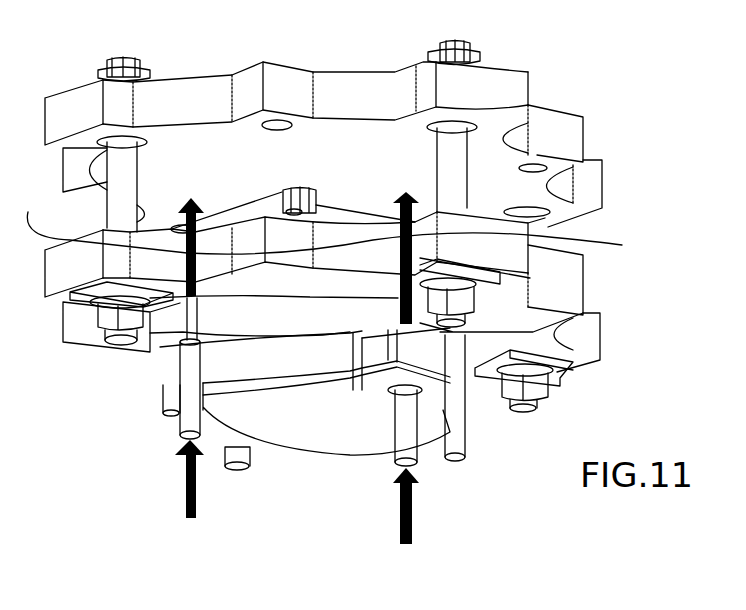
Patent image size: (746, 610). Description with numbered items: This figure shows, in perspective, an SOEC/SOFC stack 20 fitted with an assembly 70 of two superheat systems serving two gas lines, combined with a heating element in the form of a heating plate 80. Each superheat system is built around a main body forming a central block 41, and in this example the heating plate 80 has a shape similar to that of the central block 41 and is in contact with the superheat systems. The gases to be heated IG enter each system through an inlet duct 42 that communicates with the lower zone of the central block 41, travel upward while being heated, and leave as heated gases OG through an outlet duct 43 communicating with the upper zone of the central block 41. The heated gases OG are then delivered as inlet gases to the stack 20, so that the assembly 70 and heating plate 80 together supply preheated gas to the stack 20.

The SOEC/SOFC stack 20 is at (551, 80).
The central block 41 is at (175, 335).
The inlet duct 42 is at (187, 430).
The outlet duct 43 is at (590, 332).
The assembly of two superheat systems 70 is at (263, 459).
The heating plate 80 is at (337, 437).
The heated gases OG is at (336, 222).
The gases to be heated IG is at (183, 487).